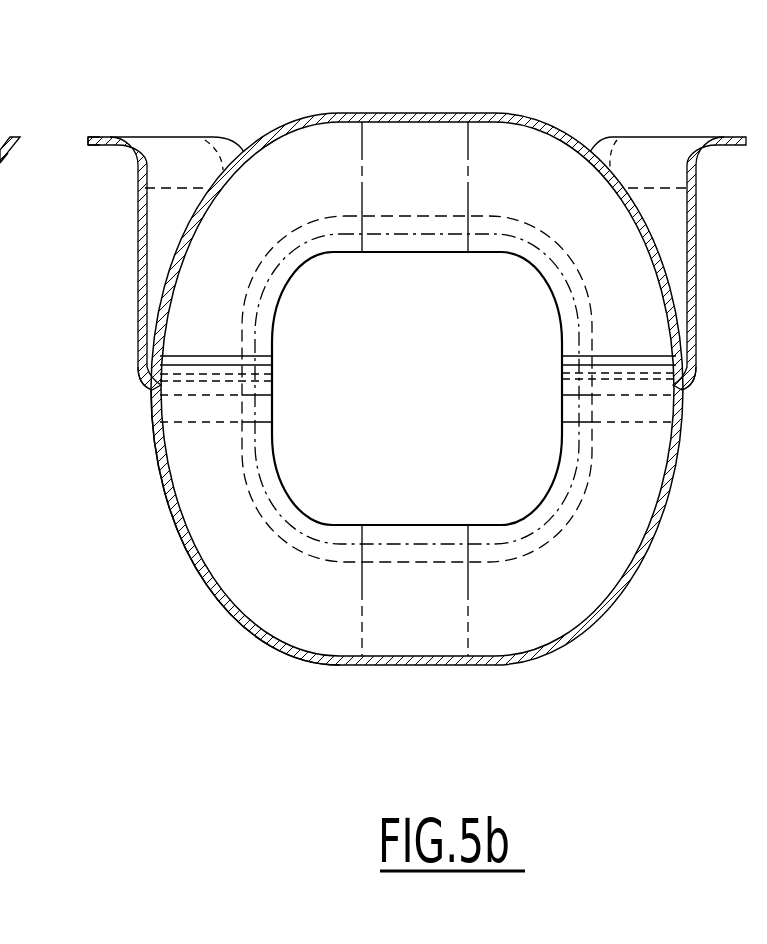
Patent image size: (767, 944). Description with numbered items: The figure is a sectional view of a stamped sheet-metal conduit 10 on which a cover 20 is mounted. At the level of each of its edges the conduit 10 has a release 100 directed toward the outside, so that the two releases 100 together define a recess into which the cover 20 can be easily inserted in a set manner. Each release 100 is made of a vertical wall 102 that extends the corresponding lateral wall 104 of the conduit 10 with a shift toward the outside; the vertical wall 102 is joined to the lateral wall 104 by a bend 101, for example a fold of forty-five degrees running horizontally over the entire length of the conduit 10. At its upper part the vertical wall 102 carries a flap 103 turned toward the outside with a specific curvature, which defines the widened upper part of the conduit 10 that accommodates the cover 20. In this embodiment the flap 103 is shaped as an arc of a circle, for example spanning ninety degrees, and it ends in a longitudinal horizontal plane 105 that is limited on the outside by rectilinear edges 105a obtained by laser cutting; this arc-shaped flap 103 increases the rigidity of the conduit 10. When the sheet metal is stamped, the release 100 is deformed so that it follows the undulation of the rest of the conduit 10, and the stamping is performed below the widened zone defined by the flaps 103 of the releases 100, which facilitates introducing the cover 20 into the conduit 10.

The conduit 10 is at (367, 660).
The cover 20 is at (403, 113).
The release 100 is at (373, 394).
The bend 101 is at (145, 383).
The vertical wall 102 is at (140, 300).
The flap 103 is at (148, 157).
The lateral wall 104 is at (200, 575).
The longitudinal horizontal plane 105 is at (113, 137).
The rectilinear edge 105a is at (88, 140).